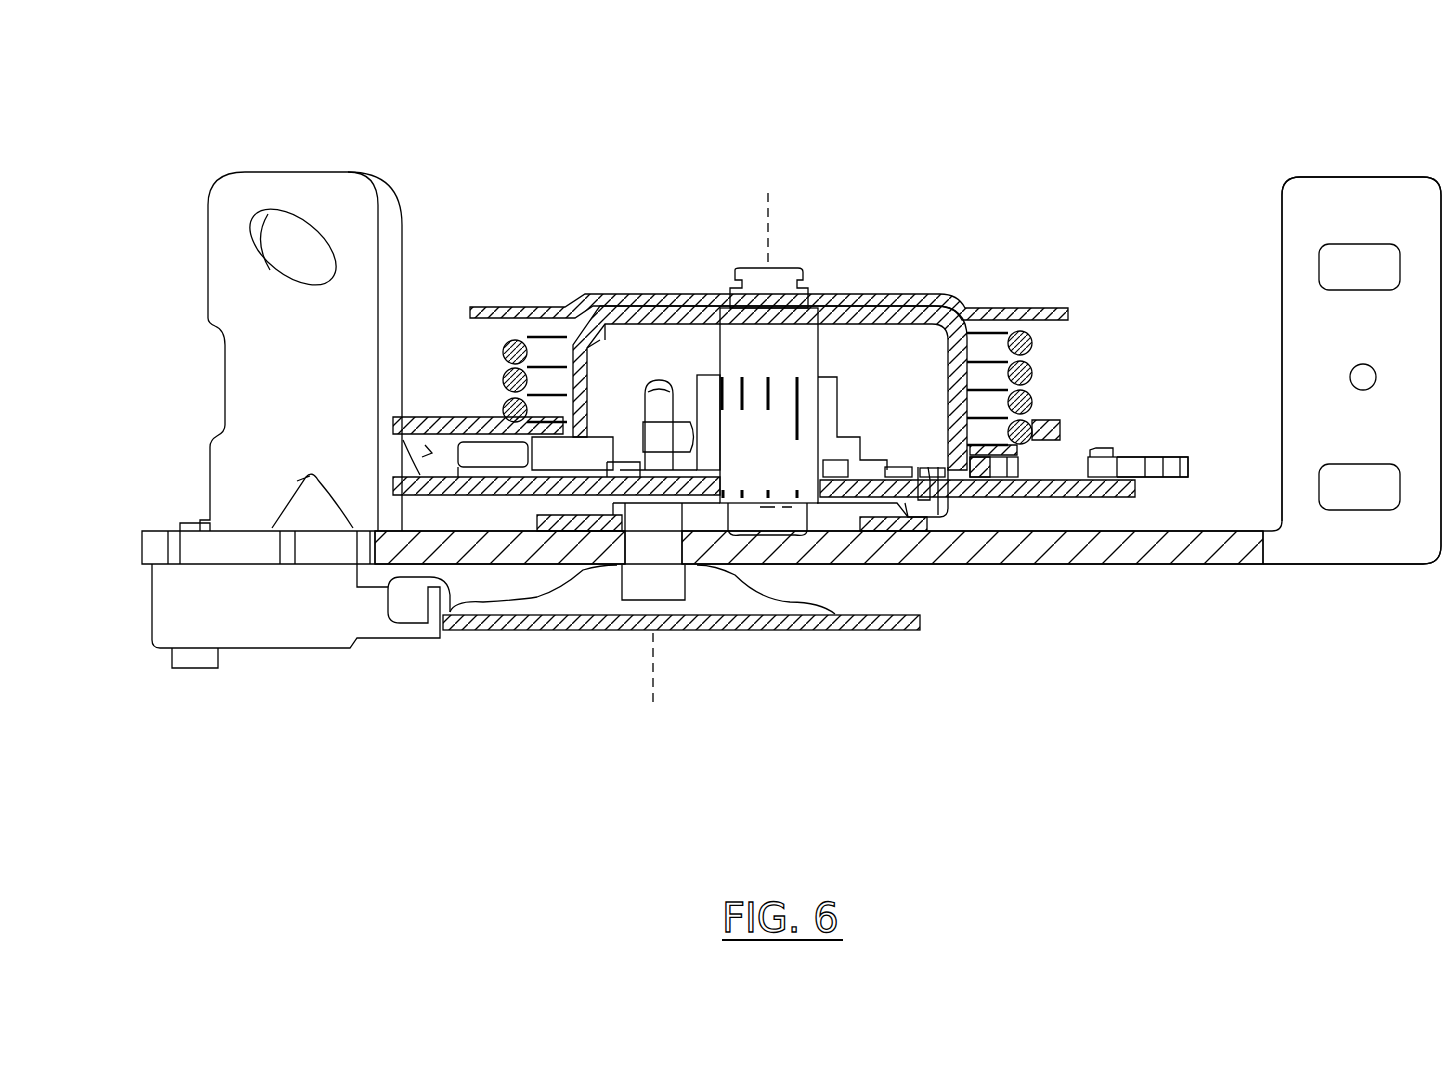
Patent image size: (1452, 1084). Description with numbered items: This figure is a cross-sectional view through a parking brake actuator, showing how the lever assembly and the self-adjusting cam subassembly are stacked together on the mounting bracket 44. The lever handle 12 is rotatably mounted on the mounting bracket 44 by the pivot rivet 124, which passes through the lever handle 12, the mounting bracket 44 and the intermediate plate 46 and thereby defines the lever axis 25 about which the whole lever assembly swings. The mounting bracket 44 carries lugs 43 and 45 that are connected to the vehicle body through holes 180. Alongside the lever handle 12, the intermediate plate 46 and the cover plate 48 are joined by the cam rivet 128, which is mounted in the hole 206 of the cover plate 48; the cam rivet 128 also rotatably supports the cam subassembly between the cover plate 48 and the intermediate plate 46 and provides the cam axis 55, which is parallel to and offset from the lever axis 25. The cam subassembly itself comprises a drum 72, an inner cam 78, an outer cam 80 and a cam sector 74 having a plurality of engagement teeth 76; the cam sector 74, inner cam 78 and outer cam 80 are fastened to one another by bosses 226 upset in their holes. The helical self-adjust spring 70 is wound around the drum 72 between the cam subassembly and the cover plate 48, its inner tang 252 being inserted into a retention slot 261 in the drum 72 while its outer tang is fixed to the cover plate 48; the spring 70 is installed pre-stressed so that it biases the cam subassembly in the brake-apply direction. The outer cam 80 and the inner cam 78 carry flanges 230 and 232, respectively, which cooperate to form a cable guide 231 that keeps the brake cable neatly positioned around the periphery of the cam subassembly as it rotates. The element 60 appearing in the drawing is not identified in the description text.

The lever handle 12 is at (820, 632).
The lever axis 25 is at (655, 690).
The lug 43 is at (1395, 546).
The mounting bracket 44 is at (180, 523).
The lug 45 is at (250, 190).
The intermediate plate 46 is at (912, 520).
The cover plate 48 is at (862, 300).
The cam axis 55 is at (770, 195).
The housing base 60 is at (253, 648).
The helical self-adjust spring 70 is at (500, 345).
The drum 72 is at (643, 347).
The cam sector 74 is at (490, 455).
The engagement teeth 76 is at (1180, 497).
The inner cam 78 is at (432, 417).
The outer cam 80 is at (435, 495).
The pivot rivet 124 is at (638, 583).
The cam rivet 128 is at (745, 345).
The holes 180 is at (1334, 479).
The hole 206 is at (805, 300).
The bosses 226 is at (1100, 448).
The flange 230 is at (410, 417).
The cable guide 231 is at (432, 453).
The flange 232 is at (425, 457).
The inner tang 252 is at (660, 407).
The retention slot 261 is at (663, 378).